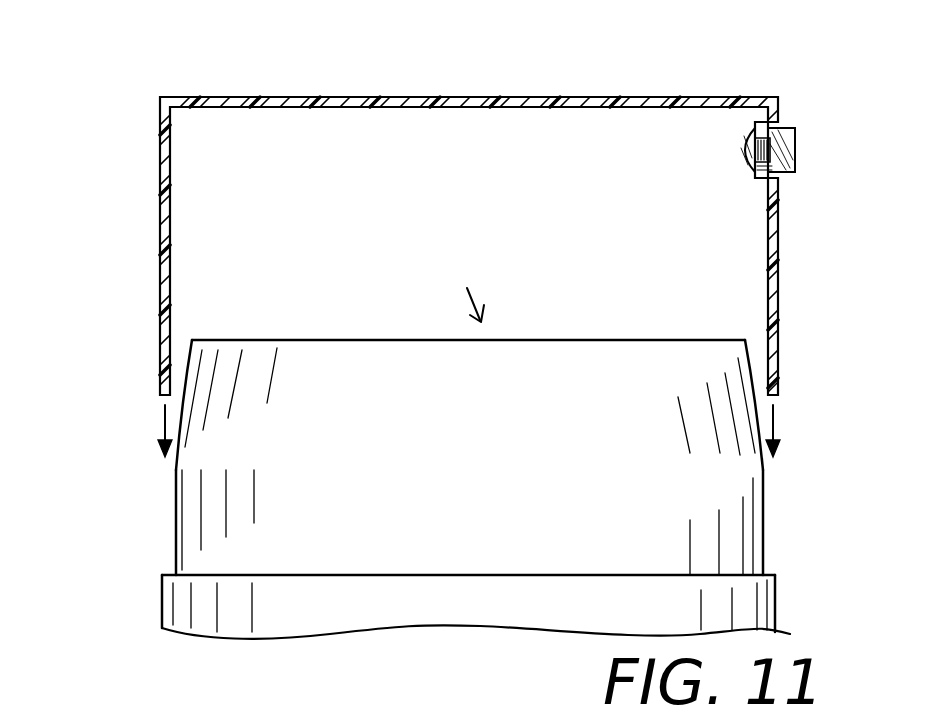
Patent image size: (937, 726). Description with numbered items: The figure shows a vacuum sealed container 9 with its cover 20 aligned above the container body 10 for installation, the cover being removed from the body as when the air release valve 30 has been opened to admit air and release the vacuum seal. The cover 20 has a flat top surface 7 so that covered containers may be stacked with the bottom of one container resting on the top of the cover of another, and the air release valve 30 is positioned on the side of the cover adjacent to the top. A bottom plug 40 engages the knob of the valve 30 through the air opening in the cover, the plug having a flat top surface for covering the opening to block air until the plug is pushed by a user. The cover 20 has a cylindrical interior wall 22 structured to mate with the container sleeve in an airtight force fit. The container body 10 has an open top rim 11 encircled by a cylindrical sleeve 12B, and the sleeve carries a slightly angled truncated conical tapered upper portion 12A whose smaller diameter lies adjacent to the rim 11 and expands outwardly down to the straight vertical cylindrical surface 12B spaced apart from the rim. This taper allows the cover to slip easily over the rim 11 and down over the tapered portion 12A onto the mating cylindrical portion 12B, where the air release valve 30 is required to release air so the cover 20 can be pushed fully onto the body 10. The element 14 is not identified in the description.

The vacuum sealed container 9 is at (80, 102).
The flat top surface 7 is at (686, 98).
The cover 20 is at (210, 97).
The interior cover sleeve 22 is at (196, 226).
The air release valve 30 is at (790, 150).
The bottom plug 40 is at (752, 153).
The open top 11 is at (430, 338).
The tapered conical upper portion 12A is at (188, 360).
The cylindrical sleeve 12B is at (174, 517).
The top surface of base 14 is at (485, 575).
The container body 10 is at (162, 612).